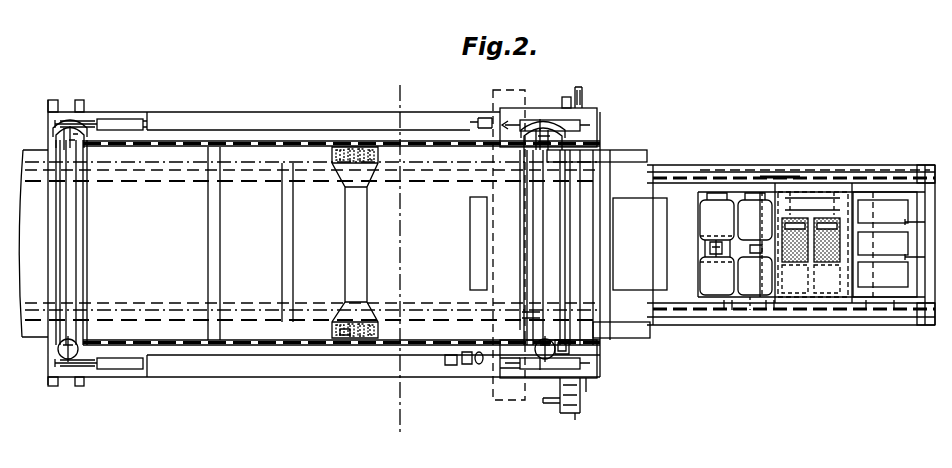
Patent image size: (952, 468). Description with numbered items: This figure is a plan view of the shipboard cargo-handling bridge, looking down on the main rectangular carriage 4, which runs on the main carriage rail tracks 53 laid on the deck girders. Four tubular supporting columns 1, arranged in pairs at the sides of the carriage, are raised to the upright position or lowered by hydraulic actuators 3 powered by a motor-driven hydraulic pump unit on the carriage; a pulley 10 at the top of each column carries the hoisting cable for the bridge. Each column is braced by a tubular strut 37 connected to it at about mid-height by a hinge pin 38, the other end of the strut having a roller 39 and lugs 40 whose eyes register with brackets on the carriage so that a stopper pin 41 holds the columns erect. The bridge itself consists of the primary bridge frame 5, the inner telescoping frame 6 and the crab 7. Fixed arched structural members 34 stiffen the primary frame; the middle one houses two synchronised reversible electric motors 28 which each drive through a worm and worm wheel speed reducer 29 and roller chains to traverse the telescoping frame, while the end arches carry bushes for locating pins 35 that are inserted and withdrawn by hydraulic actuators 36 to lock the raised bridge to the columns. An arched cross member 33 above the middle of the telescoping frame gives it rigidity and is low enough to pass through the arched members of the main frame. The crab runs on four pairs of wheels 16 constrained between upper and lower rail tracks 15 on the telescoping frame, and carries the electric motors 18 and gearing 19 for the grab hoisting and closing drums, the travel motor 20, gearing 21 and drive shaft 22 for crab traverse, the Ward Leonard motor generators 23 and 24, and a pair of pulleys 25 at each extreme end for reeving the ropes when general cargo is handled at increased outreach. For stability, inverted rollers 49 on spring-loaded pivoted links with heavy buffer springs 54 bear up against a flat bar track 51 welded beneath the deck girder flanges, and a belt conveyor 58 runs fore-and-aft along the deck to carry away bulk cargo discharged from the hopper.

The tubular supporting columns 1 is at (583, 355).
The hydraulic actuators 3 is at (123, 121).
The main rectangular carriage 4 is at (279, 124).
The primary bridge frame 5 is at (153, 158).
The inner telescoping frame 6 is at (690, 163).
The crab 7 is at (786, 178).
The pulley 10 is at (615, 350).
The upper and lower rail tracks 15 is at (818, 180).
The wheels 16 is at (728, 310).
The electric motors 18 is at (811, 255).
The gearing 19 is at (813, 244).
The travel motor 20 is at (708, 247).
The gearing 21 is at (810, 203).
The drive shaft 22 is at (755, 244).
The Ward Leonard motor generator 23 is at (712, 280).
The Ward Leonard motor generator 24 is at (757, 300).
The pulleys 25 is at (708, 237).
The reversible electric motors 28 is at (368, 148).
The worm and worm wheel speed reducer 29 is at (342, 340).
The arched cross member 33 is at (545, 252).
The arched structural members 34 is at (482, 122).
The locating pins 35 is at (660, 200).
The hydraulic actuators 36 is at (350, 242).
The tubular strut 37 is at (515, 330).
The hinge pin 38 is at (572, 353).
The roller 39 is at (480, 364).
The lugs 40 is at (470, 355).
The stopper pin 41 is at (445, 365).
The inverted rollers 49 is at (78, 272).
The flat bar track 51 is at (577, 413).
The main carriage rail tracks 53 is at (580, 393).
The buffer springs 54 is at (560, 405).
The belt conveyor 58 is at (511, 245).